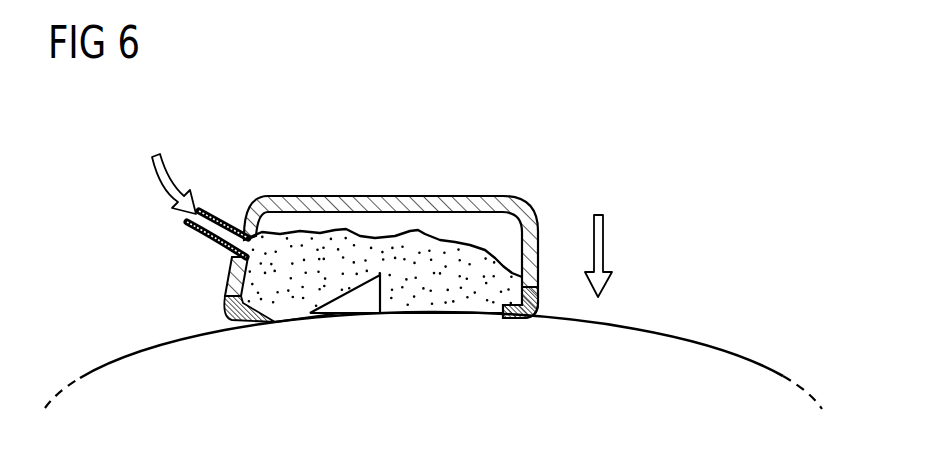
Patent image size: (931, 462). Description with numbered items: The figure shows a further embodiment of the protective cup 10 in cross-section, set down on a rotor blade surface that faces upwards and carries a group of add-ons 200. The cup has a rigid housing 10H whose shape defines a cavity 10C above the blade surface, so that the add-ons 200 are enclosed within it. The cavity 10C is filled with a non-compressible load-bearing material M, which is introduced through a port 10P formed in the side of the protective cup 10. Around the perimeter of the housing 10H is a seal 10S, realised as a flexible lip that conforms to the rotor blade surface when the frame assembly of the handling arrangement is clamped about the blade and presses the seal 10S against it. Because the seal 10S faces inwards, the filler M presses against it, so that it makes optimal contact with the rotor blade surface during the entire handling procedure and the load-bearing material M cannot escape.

The protective cup 10 is at (503, 142).
The rigid housing 10H is at (305, 195).
The cavity 10C is at (458, 242).
The port 10P is at (207, 210).
The seal 10S is at (226, 304).
The load-bearing material M is at (293, 300).
The add-on 200 is at (363, 307).